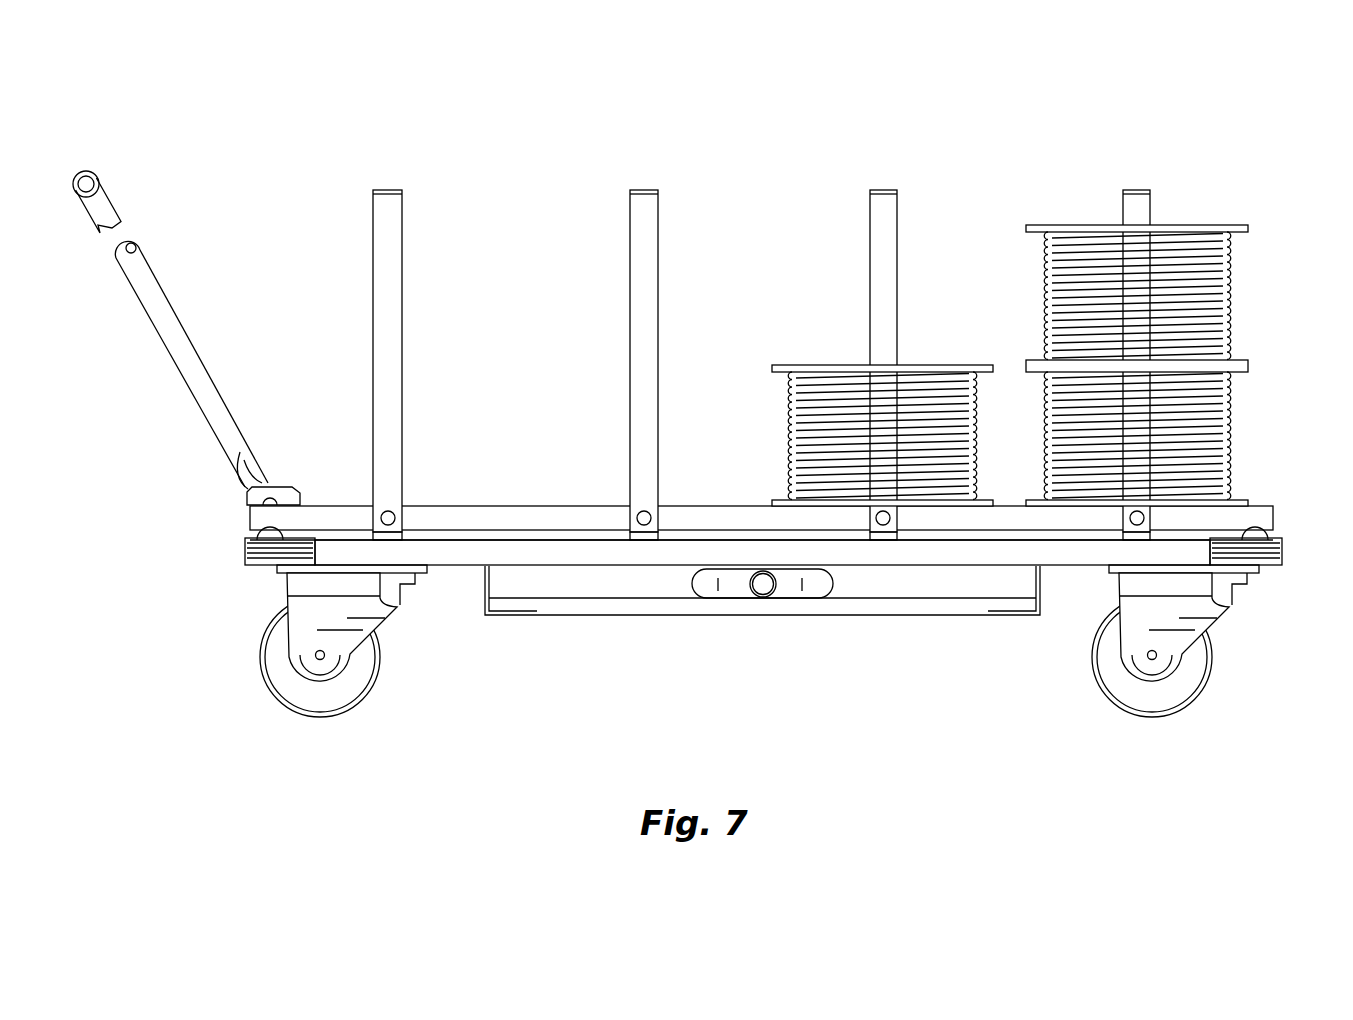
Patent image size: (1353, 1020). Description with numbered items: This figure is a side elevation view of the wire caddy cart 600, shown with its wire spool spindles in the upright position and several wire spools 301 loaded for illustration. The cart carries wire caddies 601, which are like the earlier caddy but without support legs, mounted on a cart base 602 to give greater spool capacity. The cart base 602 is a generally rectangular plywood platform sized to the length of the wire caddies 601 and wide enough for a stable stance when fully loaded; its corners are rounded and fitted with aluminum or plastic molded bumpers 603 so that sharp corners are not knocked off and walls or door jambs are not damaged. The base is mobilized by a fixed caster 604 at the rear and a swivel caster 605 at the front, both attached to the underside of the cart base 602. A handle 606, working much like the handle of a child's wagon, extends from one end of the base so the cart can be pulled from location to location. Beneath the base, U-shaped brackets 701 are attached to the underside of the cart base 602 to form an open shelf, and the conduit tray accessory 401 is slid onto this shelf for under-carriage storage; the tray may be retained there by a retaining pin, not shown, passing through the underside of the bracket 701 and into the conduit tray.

The wire caddy cart 600 is at (750, 110).
The wire caddy 601 is at (555, 500).
The cart base 602 is at (891, 555).
The bumper 603 is at (245, 548).
The fixed caster 604 is at (1190, 700).
The swivel caster 605 is at (357, 700).
The handle 606 is at (150, 322).
The wire spool 301 is at (830, 363).
The U-shaped bracket 701 is at (510, 618).
The conduit tray accessory 401 is at (726, 630).